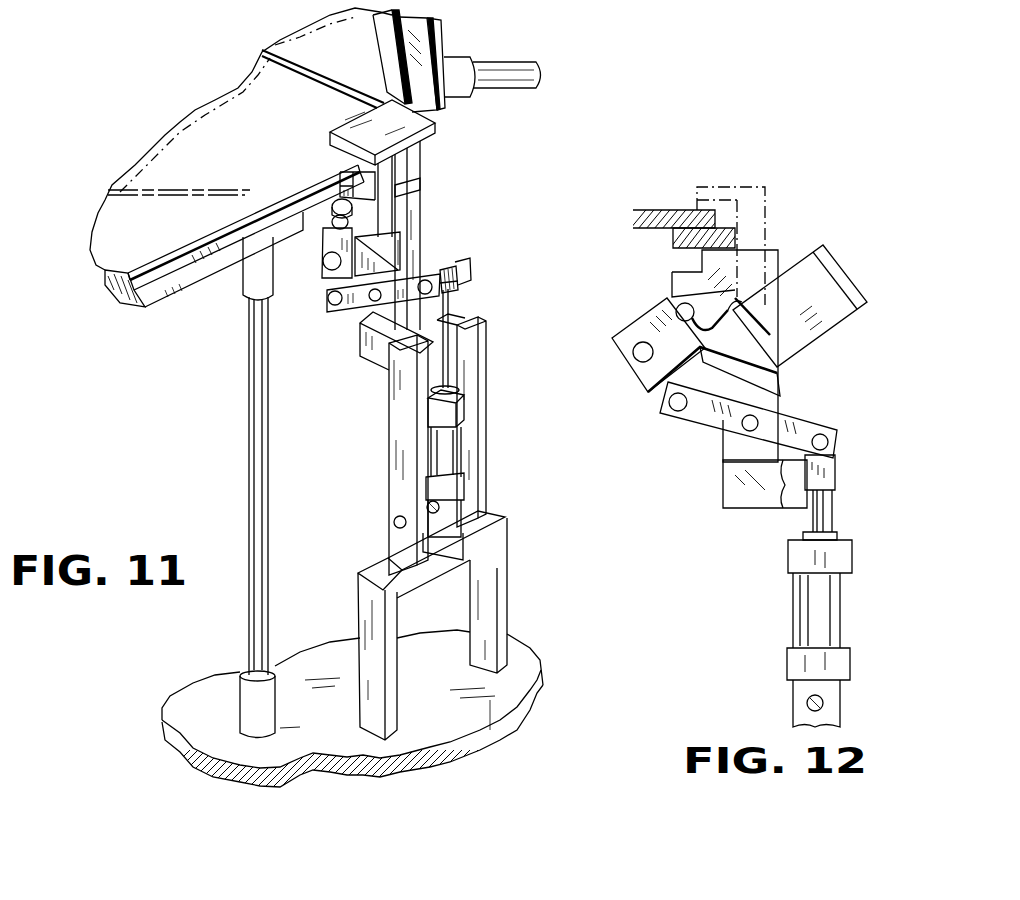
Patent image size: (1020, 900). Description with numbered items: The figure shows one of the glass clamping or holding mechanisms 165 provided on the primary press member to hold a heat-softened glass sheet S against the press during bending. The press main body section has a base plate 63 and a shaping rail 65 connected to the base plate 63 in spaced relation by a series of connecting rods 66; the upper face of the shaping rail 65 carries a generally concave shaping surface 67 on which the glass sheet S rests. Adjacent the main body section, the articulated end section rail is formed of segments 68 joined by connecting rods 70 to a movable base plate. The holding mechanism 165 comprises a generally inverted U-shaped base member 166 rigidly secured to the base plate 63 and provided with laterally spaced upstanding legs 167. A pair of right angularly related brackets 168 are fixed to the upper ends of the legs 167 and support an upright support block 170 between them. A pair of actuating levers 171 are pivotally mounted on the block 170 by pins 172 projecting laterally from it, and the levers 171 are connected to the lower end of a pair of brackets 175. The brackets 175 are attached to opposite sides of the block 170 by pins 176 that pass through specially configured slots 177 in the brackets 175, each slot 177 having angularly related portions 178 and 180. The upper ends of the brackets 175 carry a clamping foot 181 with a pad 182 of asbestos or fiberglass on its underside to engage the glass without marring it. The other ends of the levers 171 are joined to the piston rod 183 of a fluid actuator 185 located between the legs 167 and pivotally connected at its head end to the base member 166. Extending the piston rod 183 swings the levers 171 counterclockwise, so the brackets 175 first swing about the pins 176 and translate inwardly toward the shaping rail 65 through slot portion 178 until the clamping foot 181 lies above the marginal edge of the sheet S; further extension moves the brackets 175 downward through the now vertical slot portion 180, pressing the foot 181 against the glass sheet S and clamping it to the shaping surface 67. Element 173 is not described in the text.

In FIG. 11, the glass sheet S is at (133, 196).
In FIG. 12, the glass sheet S is at (657, 213).
In FIG. 11, the base plate 63 is at (193, 697).
In FIG. 11, the shaping rail 65 is at (157, 307).
In FIG. 12, the shaping rail 65 is at (737, 235).
In FIG. 11, the connecting rod 66 is at (250, 445).
In FIG. 11, the shaping surface 67 is at (193, 275).
In FIG. 11, the segment 68 is at (441, 45).
In FIG. 11, the connecting rod 70 is at (530, 67).
In FIG. 11, the glass clamping mechanism 165 is at (505, 216).
In FIG. 12, the glass clamping mechanism 165 is at (677, 483).
In FIG. 11, the base member 166 is at (506, 603).
In FIG. 11, the leg 167 is at (400, 438).
In FIG. 12, the leg 167 is at (797, 532).
In FIG. 11, the bracket 168 is at (372, 360).
In FIG. 12, the bracket 168 is at (770, 503).
In FIG. 11, the support block 170 is at (420, 230).
In FIG. 12, the support block 170 is at (780, 396).
In FIG. 11, the actuating lever 171 is at (436, 274).
In FIG. 12, the actuating lever 171 is at (687, 415).
In FIG. 11, the pin 172 is at (362, 305).
In FIG. 12, the pin 172 is at (748, 428).
In FIG. 11, the link 173 is at (330, 296).
In FIG. 12, the link 173 is at (657, 390).
In FIG. 11, the bracket 175 is at (340, 262).
In FIG. 12, the bracket 175 is at (650, 332).
In FIG. 11, the pin 176 is at (332, 202).
In FIG. 12, the pin 176 is at (678, 308).
In FIG. 11, the slot 177 is at (398, 208).
In FIG. 12, the slot 177 is at (718, 322).
In FIG. 11, the slot portion 178 is at (333, 230).
In FIG. 12, the slot portion 178 is at (703, 358).
In FIG. 12, the slot portion 180 is at (733, 300).
In FIG. 11, the clamping foot 181 is at (432, 117).
In FIG. 12, the clamping foot 181 is at (847, 283).
In FIG. 11, the pad 182 is at (332, 148).
In FIG. 12, the pad 182 is at (813, 260).
In FIG. 11, the piston rod 183 is at (449, 377).
In FIG. 12, the piston rod 183 is at (833, 520).
In FIG. 11, the fluid actuator 185 is at (449, 445).
In FIG. 12, the fluid actuator 185 is at (842, 597).